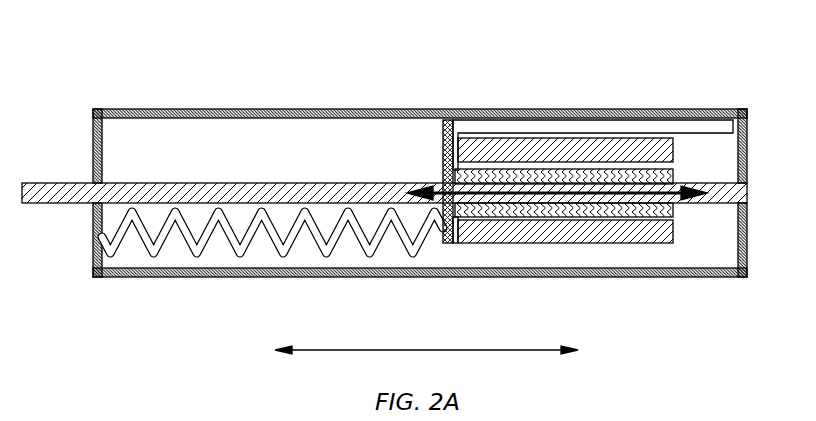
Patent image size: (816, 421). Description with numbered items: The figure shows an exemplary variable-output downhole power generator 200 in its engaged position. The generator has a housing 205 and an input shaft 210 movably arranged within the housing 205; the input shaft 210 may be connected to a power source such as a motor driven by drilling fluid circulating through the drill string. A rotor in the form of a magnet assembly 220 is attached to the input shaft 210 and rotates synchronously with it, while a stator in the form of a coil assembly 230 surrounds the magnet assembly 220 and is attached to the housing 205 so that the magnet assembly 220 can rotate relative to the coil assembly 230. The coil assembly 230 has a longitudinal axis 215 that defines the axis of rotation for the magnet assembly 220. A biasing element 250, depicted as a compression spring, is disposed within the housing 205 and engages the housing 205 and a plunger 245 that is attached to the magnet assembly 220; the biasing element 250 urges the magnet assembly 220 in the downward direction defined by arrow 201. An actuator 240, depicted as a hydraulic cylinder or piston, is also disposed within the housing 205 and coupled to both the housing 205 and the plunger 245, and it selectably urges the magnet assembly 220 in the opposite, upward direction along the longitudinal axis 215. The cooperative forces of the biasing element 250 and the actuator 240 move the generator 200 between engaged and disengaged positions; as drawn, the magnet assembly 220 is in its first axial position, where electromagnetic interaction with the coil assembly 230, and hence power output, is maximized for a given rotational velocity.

The downhole power generator 200 is at (345, 49).
The arrow 201 is at (388, 349).
The housing 205 is at (200, 110).
The input shaft 210 is at (60, 190).
The longitudinal axis 215 is at (692, 200).
The magnet assembly 220 is at (600, 222).
The coil assembly 230 is at (523, 237).
The actuator 240 is at (585, 125).
The plunger 245 is at (440, 133).
The biasing element 250 is at (272, 242).